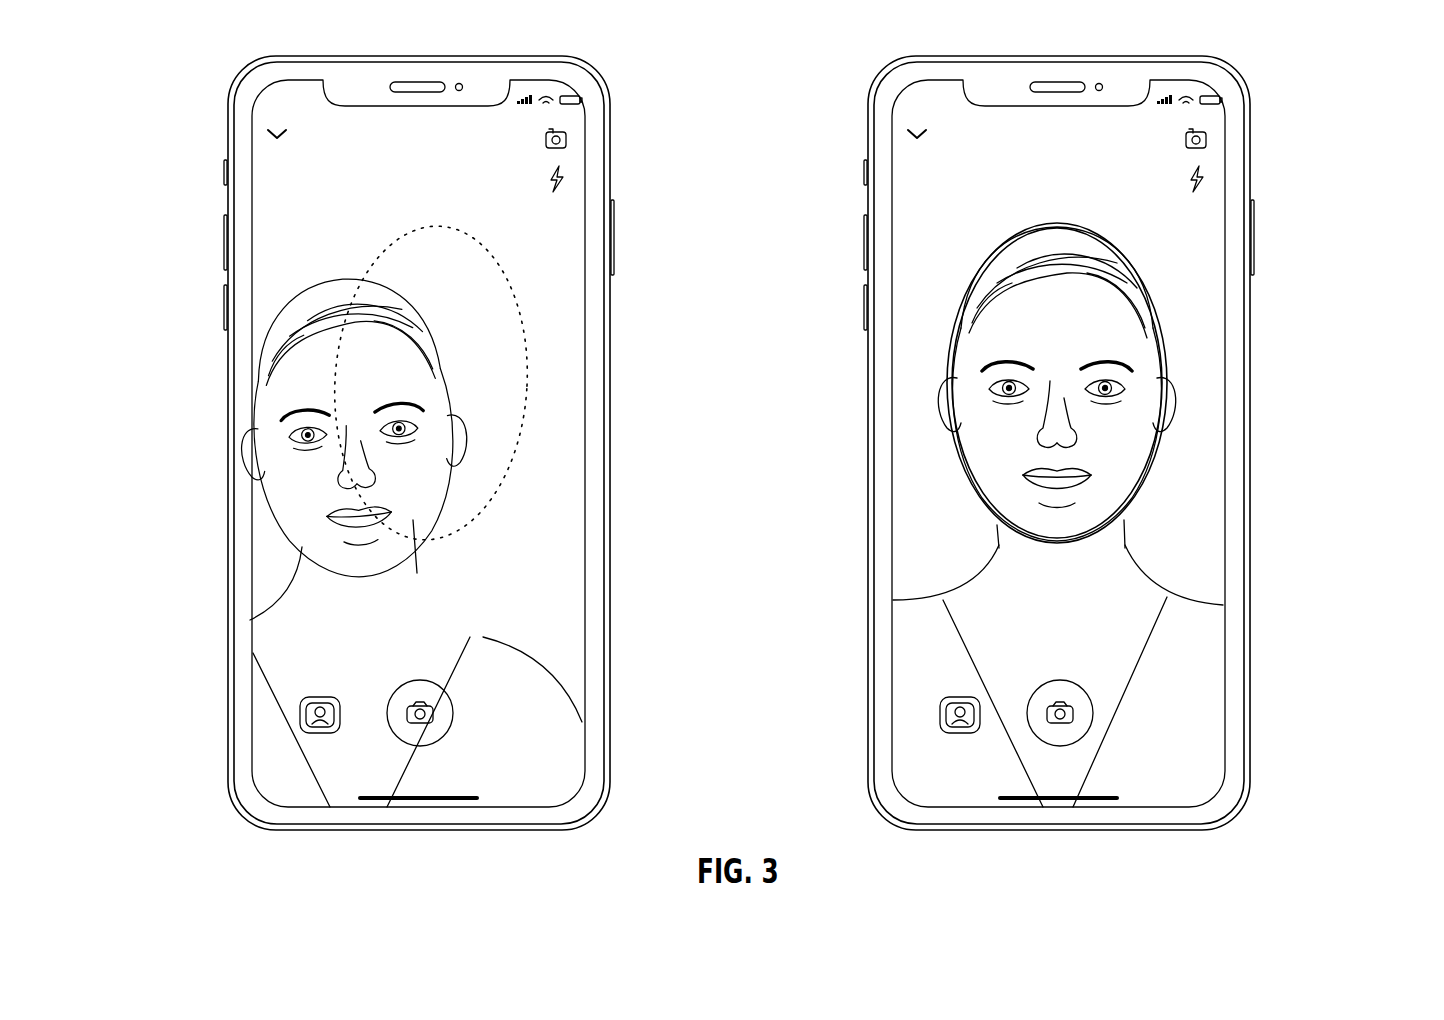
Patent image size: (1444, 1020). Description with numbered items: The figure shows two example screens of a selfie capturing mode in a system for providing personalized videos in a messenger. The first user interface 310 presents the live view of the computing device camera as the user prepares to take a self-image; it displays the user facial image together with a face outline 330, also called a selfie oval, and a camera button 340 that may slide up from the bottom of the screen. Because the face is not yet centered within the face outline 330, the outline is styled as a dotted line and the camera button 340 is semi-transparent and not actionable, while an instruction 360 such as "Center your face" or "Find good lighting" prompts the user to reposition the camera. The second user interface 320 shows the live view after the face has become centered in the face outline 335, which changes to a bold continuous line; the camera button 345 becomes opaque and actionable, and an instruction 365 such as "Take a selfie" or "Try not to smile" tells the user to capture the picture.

The user interface 310 is at (443, 432).
The user interface 320 is at (1082, 437).
The face outline 330 is at (564, 382).
The face outline 335 is at (1191, 383).
The camera button 340 is at (557, 650).
The camera button 345 is at (1189, 649).
The instruction 360 is at (535, 561).
The instruction 365 is at (1184, 556).